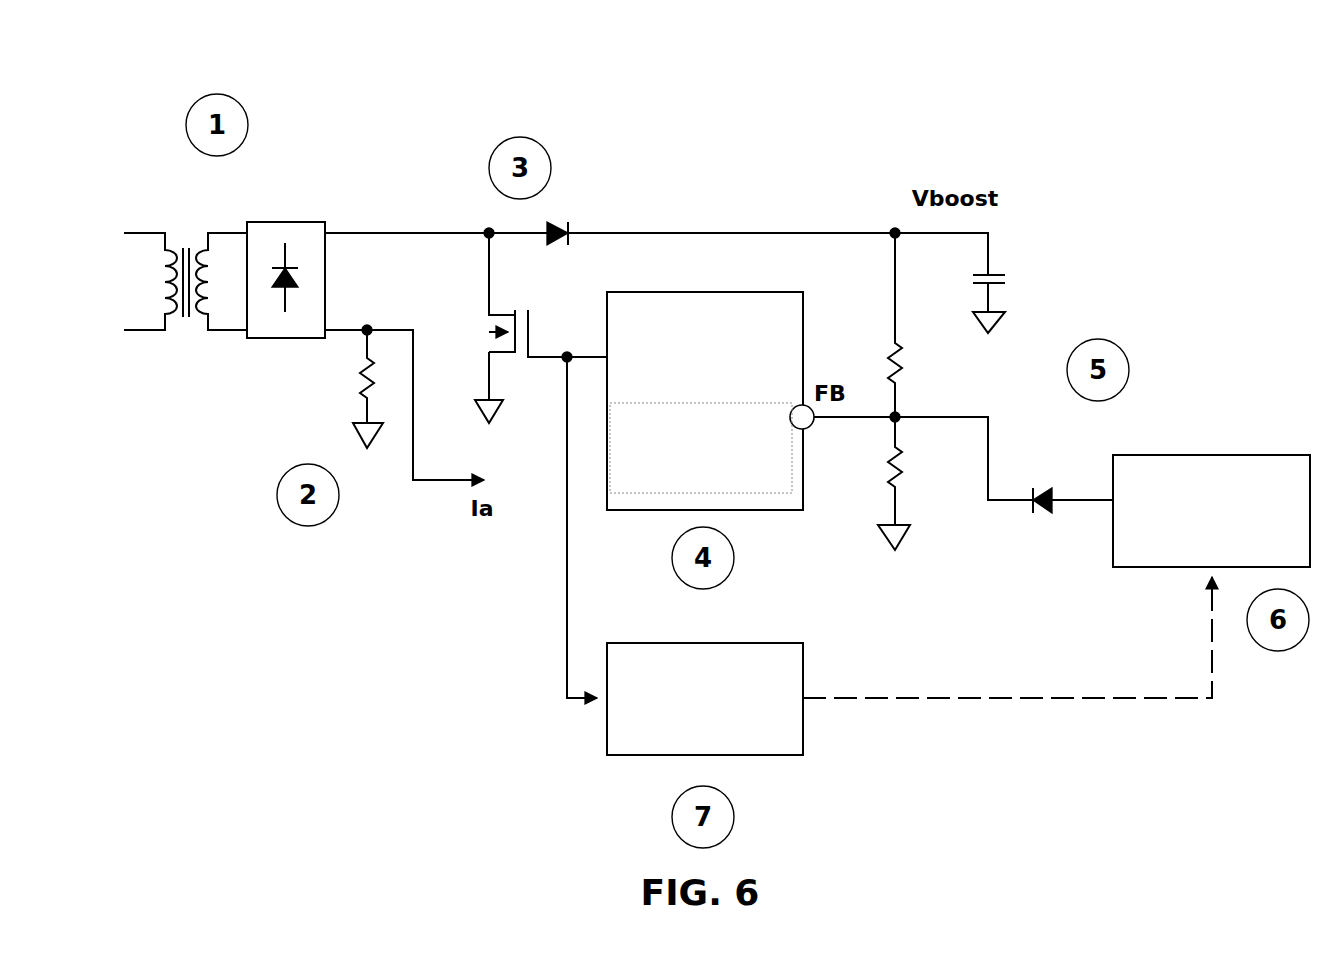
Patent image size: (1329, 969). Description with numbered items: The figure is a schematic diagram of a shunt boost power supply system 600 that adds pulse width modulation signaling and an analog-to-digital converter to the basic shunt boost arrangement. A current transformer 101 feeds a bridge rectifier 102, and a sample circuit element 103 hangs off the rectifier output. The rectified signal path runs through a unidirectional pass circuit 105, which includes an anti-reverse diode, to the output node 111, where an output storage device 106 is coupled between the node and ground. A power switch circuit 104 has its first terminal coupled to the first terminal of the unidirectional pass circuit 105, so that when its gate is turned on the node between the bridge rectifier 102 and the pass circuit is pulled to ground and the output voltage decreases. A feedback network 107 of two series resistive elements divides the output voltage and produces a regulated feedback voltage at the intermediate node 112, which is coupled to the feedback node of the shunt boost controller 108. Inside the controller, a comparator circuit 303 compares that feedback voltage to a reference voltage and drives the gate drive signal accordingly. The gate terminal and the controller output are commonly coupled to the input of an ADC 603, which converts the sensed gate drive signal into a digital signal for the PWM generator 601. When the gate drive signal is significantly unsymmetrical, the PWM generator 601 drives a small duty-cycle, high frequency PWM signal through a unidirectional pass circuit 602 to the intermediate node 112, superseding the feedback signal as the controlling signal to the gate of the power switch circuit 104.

The shunt boost power supply system 600 is at (997, 66).
The current transformer 101 is at (182, 317).
The bridge rectifier 102 is at (325, 222).
The sample circuit element 103 is at (362, 388).
The power switch circuit 104 is at (520, 312).
The unidirectional pass circuit 105 is at (568, 220).
The output storage device 106 is at (993, 275).
The feedback network 107 is at (1015, 345).
The shunt boost controller 108 is at (710, 378).
The output node 111 is at (895, 233).
The intermediate node 112 is at (895, 417).
The comparator circuit 303 is at (702, 448).
The PWM generator 601 is at (1207, 455).
The unidirectional pass circuit 602 is at (1045, 482).
The ADC 603 is at (727, 643).